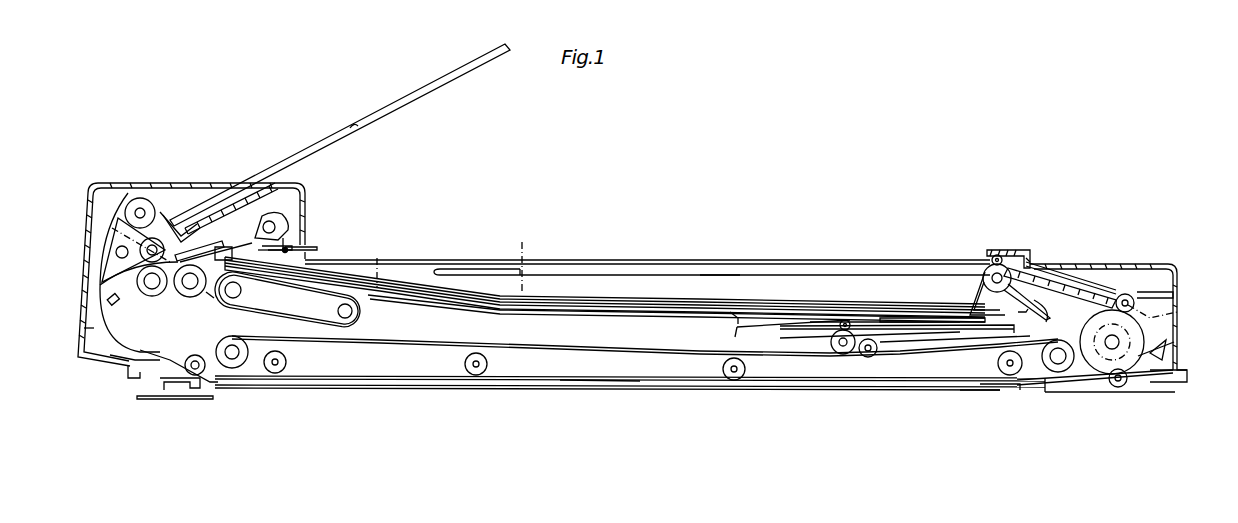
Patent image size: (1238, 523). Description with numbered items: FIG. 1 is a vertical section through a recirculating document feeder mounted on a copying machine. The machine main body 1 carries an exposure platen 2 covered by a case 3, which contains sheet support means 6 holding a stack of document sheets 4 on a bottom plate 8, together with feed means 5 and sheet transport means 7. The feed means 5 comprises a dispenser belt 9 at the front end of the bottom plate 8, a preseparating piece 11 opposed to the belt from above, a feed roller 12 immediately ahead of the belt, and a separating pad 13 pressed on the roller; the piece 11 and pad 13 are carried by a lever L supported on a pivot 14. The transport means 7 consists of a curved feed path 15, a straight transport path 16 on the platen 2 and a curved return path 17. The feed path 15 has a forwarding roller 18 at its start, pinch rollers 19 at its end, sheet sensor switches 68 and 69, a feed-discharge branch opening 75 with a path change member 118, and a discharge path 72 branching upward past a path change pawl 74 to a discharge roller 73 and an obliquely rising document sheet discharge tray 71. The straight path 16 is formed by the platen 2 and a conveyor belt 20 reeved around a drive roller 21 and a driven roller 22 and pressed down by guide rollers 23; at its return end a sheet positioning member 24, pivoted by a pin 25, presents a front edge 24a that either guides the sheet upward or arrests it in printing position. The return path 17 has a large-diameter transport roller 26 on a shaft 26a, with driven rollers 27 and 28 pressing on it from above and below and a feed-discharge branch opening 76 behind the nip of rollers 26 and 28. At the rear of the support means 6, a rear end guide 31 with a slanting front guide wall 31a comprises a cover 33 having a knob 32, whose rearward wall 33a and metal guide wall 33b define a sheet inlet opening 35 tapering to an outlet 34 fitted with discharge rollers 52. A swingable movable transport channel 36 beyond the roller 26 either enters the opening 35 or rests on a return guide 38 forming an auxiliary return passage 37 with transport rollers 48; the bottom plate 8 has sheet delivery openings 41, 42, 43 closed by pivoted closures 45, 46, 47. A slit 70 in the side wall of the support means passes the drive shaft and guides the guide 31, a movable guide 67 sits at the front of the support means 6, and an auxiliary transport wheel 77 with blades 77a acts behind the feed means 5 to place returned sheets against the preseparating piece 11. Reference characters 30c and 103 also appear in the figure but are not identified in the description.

The main body 1 is at (1168, 386).
The exposure platen 2 is at (437, 388).
The case 3 is at (701, 250).
The document sheets 4 is at (616, 298).
The feed means 5 is at (212, 300).
The sheet support means 6 is at (732, 274).
The sheet transport means 7 is at (524, 381).
The bottom plate 8 is at (618, 315).
The dispenser belt 9 is at (276, 290).
The preseparating piece 11 is at (218, 243).
The feed roller 12 is at (186, 298).
The separating pad 13 is at (181, 232).
The pivot 14 is at (285, 222).
The curved feed path 15 is at (92, 328).
The straight transport path 16 is at (604, 386).
The curved return path 17 is at (1148, 342).
The forwarding roller 18 is at (146, 296).
The pinch rollers 19 is at (182, 398).
The conveyor belt 20 is at (504, 340).
The drive roller 21 is at (1066, 342).
The driven roller 22 is at (240, 364).
The guide rollers 23 is at (287, 362).
The sheet positioning member 24 is at (1036, 388).
The front edge 24a is at (996, 392).
The pin 25 is at (1056, 383).
The transport roller 26 is at (1106, 370).
The shaft 26a is at (1130, 368).
The driven roller 27 is at (1152, 292).
The driven roller 28 is at (1124, 386).
The cover edge 30c is at (1177, 302).
The rear end guide 31 is at (1030, 262).
The front guide wall 31a is at (978, 290).
The knob 32 is at (1012, 252).
The synthetic resin cover 33 is at (1055, 288).
The rearward wall 33a is at (1112, 292).
The metal guide wall 33b is at (1030, 316).
The outlet 34 is at (988, 266).
The sheet inlet opening 35 is at (1016, 329).
The movable transport channel 36 is at (1032, 280).
The auxiliary return passage 37 is at (912, 340).
The return guide 38 is at (868, 358).
The sheet delivery opening 41 is at (950, 320).
The sheet delivery opening 42 is at (882, 318).
The sheet delivery opening 43 is at (735, 316).
The closure 45 is at (952, 344).
The closure 46 is at (840, 354).
The closure 47 is at (722, 340).
The transport rollers 48 is at (840, 330).
The discharge rollers 52 is at (1026, 248).
The movable guide 67 is at (505, 262).
The sheet sensor switch 68 is at (115, 303).
The sheet sensor switch 69 is at (130, 357).
The slit 70 is at (666, 268).
The document sheet discharge tray 71 is at (354, 124).
The discharge path 72 is at (88, 225).
The discharge roller 73 is at (132, 204).
The path change pawl 74 is at (112, 256).
The feed-discharge branch opening 75 is at (164, 386).
The feed-discharge branch opening 76 is at (1174, 353).
The auxiliary transport wheel 77 is at (292, 246).
The blades 77a is at (317, 248).
The ledge 103 is at (1187, 372).
The path change member 118 is at (140, 378).
The lever L is at (253, 210).